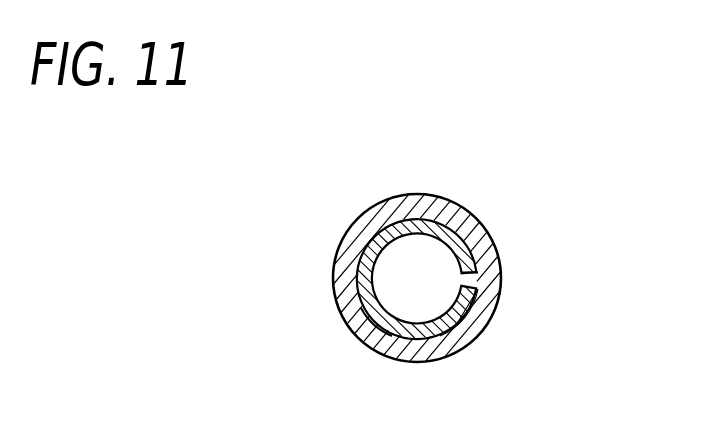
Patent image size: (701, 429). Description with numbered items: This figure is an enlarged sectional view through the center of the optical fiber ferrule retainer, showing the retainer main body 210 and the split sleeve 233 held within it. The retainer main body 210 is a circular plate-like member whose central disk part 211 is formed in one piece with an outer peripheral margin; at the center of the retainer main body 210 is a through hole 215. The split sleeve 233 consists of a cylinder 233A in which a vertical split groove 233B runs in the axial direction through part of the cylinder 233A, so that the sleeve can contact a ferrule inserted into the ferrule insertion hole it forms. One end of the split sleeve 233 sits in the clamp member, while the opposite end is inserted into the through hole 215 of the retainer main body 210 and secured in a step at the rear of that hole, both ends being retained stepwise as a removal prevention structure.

The retainer main body 210 is at (362, 215).
The disk part 211 is at (348, 254).
The split sleeve 233 is at (461, 226).
The cylinder 233A is at (366, 316).
The vertical split groove 233B is at (472, 281).
The through hole 215 is at (451, 334).